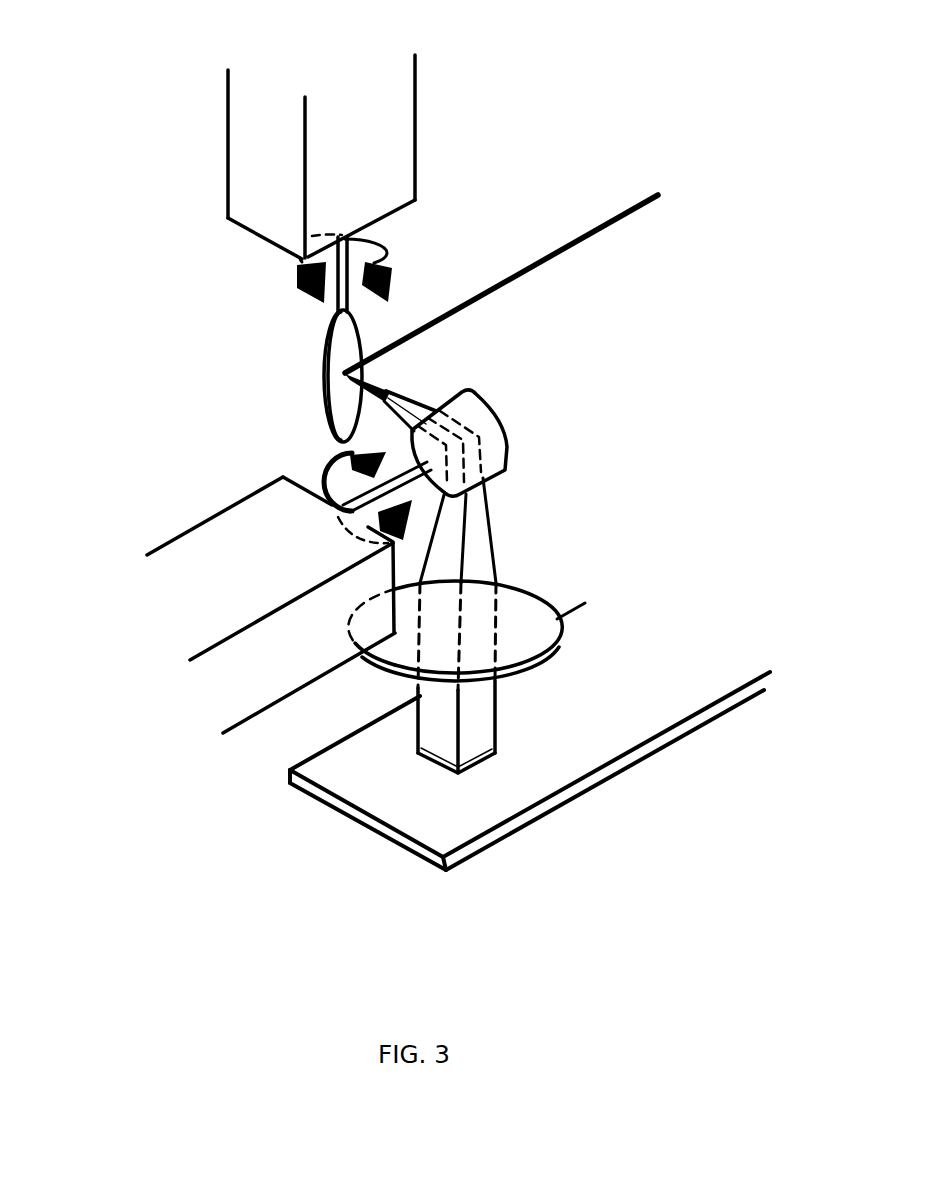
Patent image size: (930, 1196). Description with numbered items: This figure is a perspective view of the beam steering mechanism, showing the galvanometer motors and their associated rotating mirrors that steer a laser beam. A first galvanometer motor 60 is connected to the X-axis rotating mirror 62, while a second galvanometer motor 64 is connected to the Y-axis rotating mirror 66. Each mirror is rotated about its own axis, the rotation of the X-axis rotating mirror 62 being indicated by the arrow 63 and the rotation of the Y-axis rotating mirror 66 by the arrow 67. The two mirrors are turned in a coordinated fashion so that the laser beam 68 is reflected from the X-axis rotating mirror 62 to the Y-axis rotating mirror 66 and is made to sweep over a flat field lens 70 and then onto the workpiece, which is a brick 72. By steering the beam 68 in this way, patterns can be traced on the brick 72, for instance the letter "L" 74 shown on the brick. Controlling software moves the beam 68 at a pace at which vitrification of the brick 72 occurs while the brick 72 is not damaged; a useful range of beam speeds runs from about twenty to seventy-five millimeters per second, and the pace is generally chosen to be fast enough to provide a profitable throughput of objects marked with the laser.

The first galvanometer motor 60 is at (260, 212).
The X-axis rotating mirror 62 is at (350, 347).
The arrow 63 is at (393, 248).
The second galvanometer motor 64 is at (252, 530).
The Y-axis rotating mirror 66 is at (497, 455).
The arrow 67 is at (322, 460).
The beam 68 is at (587, 260).
The flat field lens 70 is at (550, 625).
The workpiece or brick 72 is at (554, 769).
The letter "L" 74 is at (430, 771).